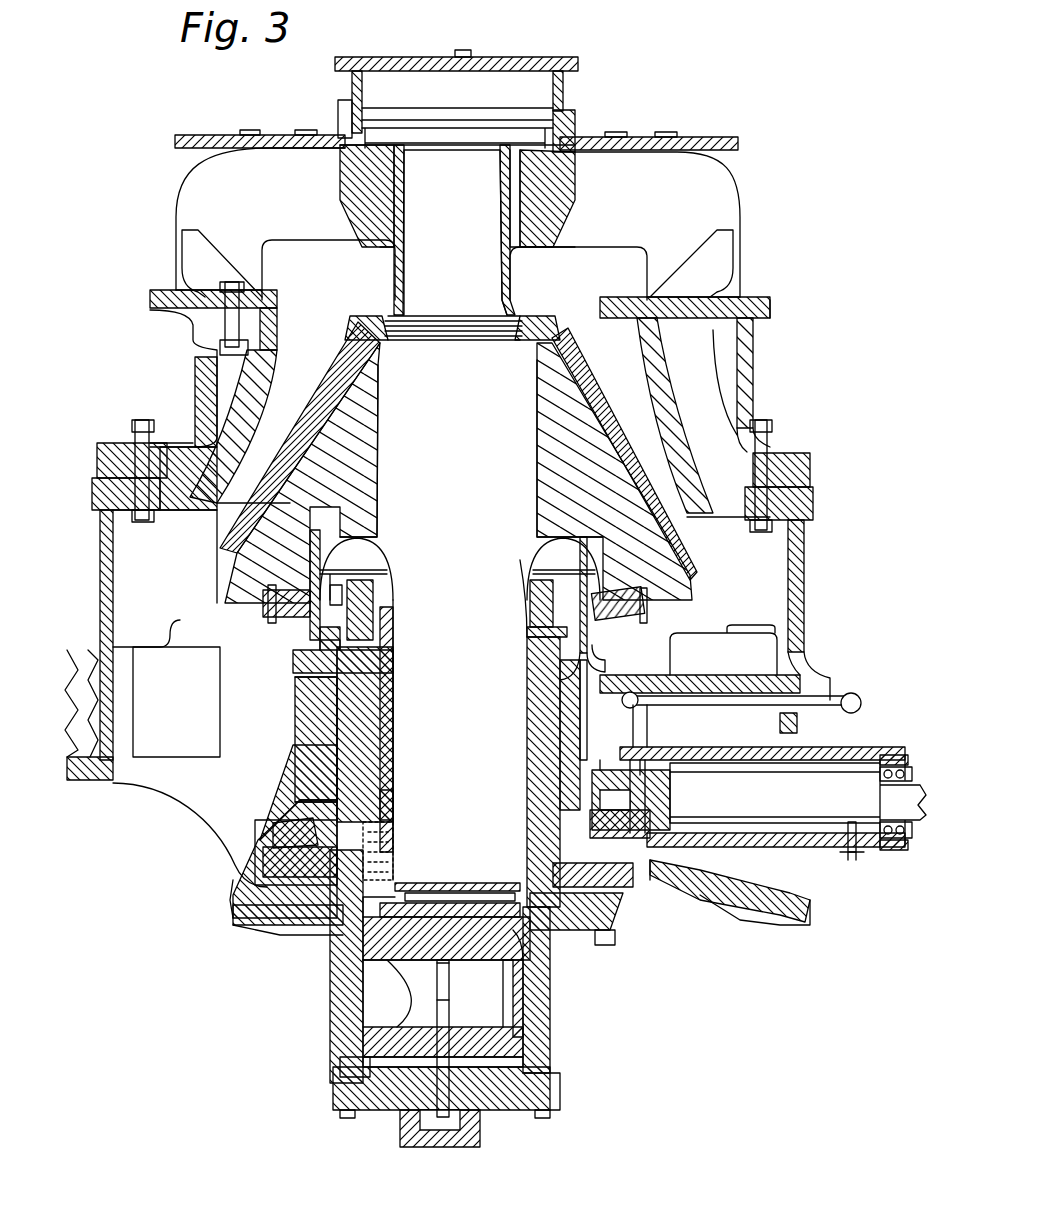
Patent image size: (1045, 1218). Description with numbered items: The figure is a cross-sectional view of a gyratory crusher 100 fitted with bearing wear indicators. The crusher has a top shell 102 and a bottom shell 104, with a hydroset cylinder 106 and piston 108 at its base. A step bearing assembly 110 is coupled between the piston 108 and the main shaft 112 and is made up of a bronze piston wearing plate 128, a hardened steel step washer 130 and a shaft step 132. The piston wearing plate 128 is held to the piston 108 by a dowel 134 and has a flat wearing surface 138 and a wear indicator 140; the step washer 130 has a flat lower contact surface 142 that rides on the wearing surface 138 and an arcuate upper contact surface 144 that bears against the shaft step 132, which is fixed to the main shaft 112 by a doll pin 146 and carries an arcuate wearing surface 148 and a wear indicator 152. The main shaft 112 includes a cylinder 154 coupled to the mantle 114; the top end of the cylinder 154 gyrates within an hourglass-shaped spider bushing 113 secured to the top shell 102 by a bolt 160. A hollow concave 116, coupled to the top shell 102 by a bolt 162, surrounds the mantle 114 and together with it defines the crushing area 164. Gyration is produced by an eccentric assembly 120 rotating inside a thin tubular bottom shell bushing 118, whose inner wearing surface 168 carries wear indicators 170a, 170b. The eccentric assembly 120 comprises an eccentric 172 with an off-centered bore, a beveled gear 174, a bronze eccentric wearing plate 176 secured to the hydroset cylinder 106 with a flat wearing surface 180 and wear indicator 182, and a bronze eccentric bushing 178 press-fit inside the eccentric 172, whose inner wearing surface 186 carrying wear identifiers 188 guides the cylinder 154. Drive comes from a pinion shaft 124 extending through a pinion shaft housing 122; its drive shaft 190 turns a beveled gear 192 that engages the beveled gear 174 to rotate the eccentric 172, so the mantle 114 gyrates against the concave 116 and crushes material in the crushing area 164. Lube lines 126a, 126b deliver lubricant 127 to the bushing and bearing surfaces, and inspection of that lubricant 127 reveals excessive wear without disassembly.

The gyratory crusher 100 is at (160, 86).
The top shell 102 is at (790, 447).
The bottom shell 104 is at (813, 498).
The hydroset cylinder 106 is at (573, 1074).
The piston 108 is at (530, 1035).
The step bearing assembly 110 is at (585, 910).
The main shaft 112 is at (548, 471).
The spider bushing 113 is at (385, 205).
The mantle 114 is at (620, 395).
The concave 116 is at (655, 332).
The bottom shell bushing 118 is at (322, 720).
The eccentric assembly 120 is at (327, 751).
The pinion shaft housing 122 is at (865, 760).
The pinion shaft 124 is at (848, 760).
The lube line 126a is at (838, 790).
The lube line 126b is at (455, 885).
The lubricant 127 is at (355, 925).
The piston wearing plate 128 is at (345, 1025).
The step washer 130 is at (340, 990).
The shaft step 132 is at (350, 950).
The dowel 134 is at (350, 1065).
The wearing surface 138 is at (545, 940).
The wear indicator 140 is at (560, 970).
The contact surface 142 is at (449, 965).
The contact surface 144 is at (490, 870).
The doll pin 146 is at (500, 860).
The wearing surface 148 is at (475, 880).
The wear indicator 152 is at (365, 898).
The cylinder 154 is at (471, 448).
The bolt 160 is at (345, 140).
The bolt 162 is at (245, 290).
The crushing area 164 is at (345, 340).
The wearing surface 168 is at (335, 690).
The wear indicator 170a is at (325, 665).
The wear indicator 170b is at (330, 773).
The eccentric 172 is at (400, 645).
The beveled gear 174 is at (325, 820).
The eccentric wearing plate 176 is at (393, 830).
The eccentric bushing 178 is at (397, 680).
The wearing surface 180 is at (335, 845).
The wear indicator 182 is at (395, 805).
The wearing surface 186 is at (396, 703).
The wear identifiers 188 is at (398, 667).
The drive shaft 190 is at (860, 848).
The beveled gear 192 is at (660, 808).